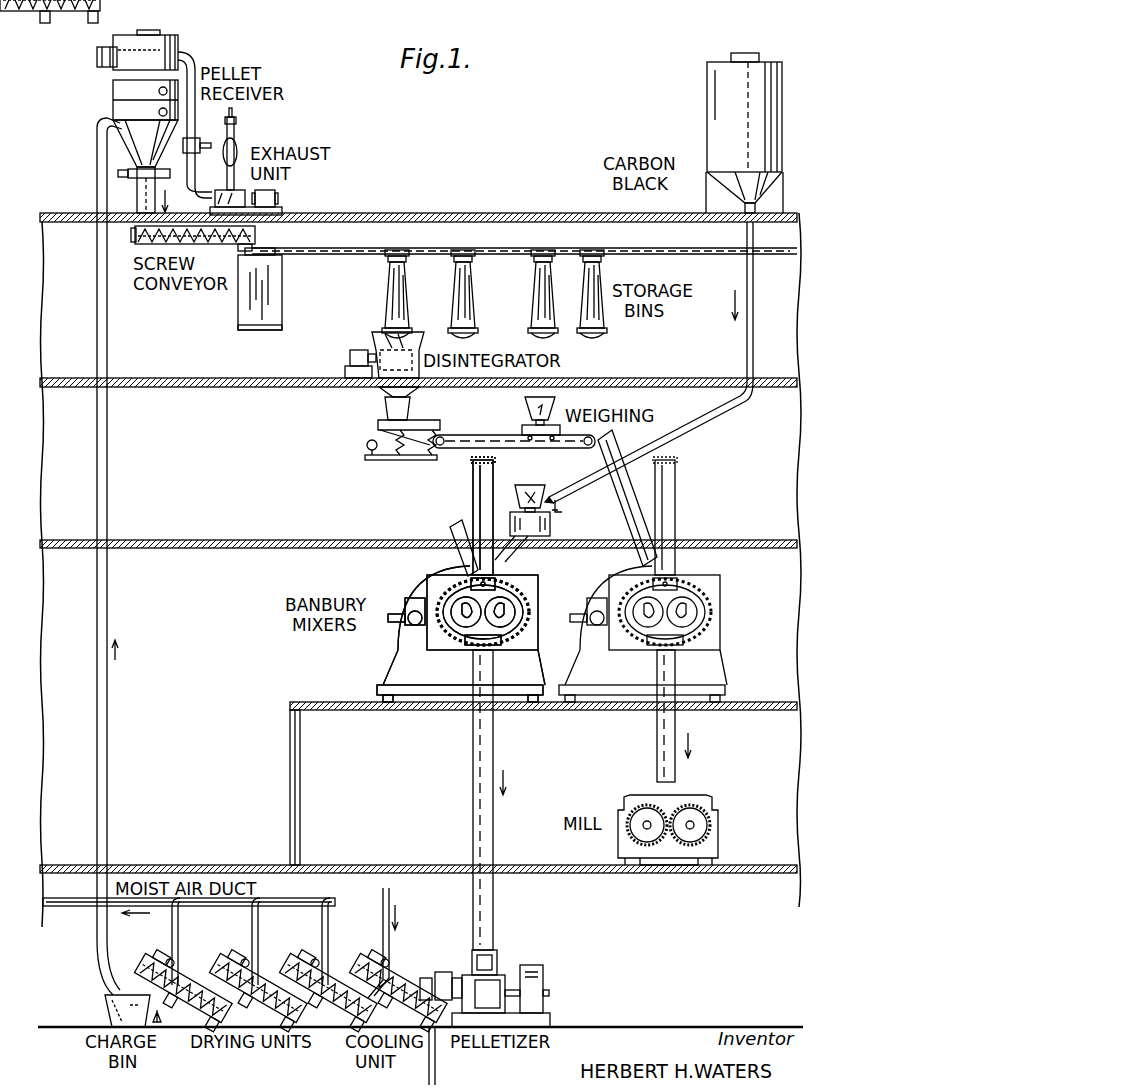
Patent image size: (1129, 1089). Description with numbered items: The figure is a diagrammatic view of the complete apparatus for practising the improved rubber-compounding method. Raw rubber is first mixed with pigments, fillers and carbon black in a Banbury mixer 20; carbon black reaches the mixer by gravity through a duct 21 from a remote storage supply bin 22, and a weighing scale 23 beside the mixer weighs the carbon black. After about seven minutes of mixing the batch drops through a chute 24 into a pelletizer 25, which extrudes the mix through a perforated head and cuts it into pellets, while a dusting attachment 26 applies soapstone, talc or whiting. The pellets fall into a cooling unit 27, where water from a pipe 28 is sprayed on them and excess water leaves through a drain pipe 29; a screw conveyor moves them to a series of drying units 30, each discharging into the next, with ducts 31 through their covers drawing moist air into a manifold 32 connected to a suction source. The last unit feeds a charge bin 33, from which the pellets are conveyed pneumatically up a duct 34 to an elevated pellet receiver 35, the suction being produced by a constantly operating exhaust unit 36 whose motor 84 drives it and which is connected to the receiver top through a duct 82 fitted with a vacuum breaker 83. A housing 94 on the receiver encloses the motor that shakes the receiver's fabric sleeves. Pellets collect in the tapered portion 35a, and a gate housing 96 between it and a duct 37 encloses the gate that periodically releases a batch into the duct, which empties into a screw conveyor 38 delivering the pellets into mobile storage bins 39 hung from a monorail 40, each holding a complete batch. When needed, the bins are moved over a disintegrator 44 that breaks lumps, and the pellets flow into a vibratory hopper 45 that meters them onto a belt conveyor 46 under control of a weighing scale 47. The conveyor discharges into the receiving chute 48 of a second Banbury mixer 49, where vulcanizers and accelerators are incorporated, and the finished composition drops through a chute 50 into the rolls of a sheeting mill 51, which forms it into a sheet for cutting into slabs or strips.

The Banbury mixer 20 is at (428, 640).
The duct 21 is at (690, 422).
The storage supply bin 22 is at (715, 120).
The weighing scale 23 is at (525, 484).
The chute 24 is at (473, 788).
The pelletizer 25 is at (505, 968).
The dusting attachment 26 is at (445, 970).
The cooling unit 27 is at (356, 975).
The pipe 28 is at (389, 904).
The drain pipe 29 is at (429, 1072).
The drying unit 30 is at (145, 965).
The duct 31 is at (178, 945).
The manifold 32 is at (78, 908).
The charge bin 33 is at (110, 1010).
The duct 34 is at (108, 466).
The pellet receiver 35 is at (110, 92).
The tapered portion 35a is at (133, 134).
The exhaust unit 36 is at (275, 185).
The duct 37 is at (140, 198).
The screw conveyor 38 is at (135, 246).
The mobile storage bin 39 is at (280, 300).
The monorail 40 is at (326, 256).
The disintegrator 44 is at (376, 345).
The vibratory hopper 45 is at (385, 404).
The belt conveyor 46 is at (492, 416).
The weighing scale 47 is at (550, 402).
The receiving chute 48 is at (622, 482).
The second Banbury mixer 49 is at (720, 588).
The chute 50 is at (658, 731).
The sheeting mill 51 is at (716, 813).
The duct 82 is at (196, 114).
The vacuum breaker 83 is at (200, 141).
The operating motor 84 is at (272, 198).
The housing 94 is at (97, 55).
The gate housing 96 is at (128, 174).